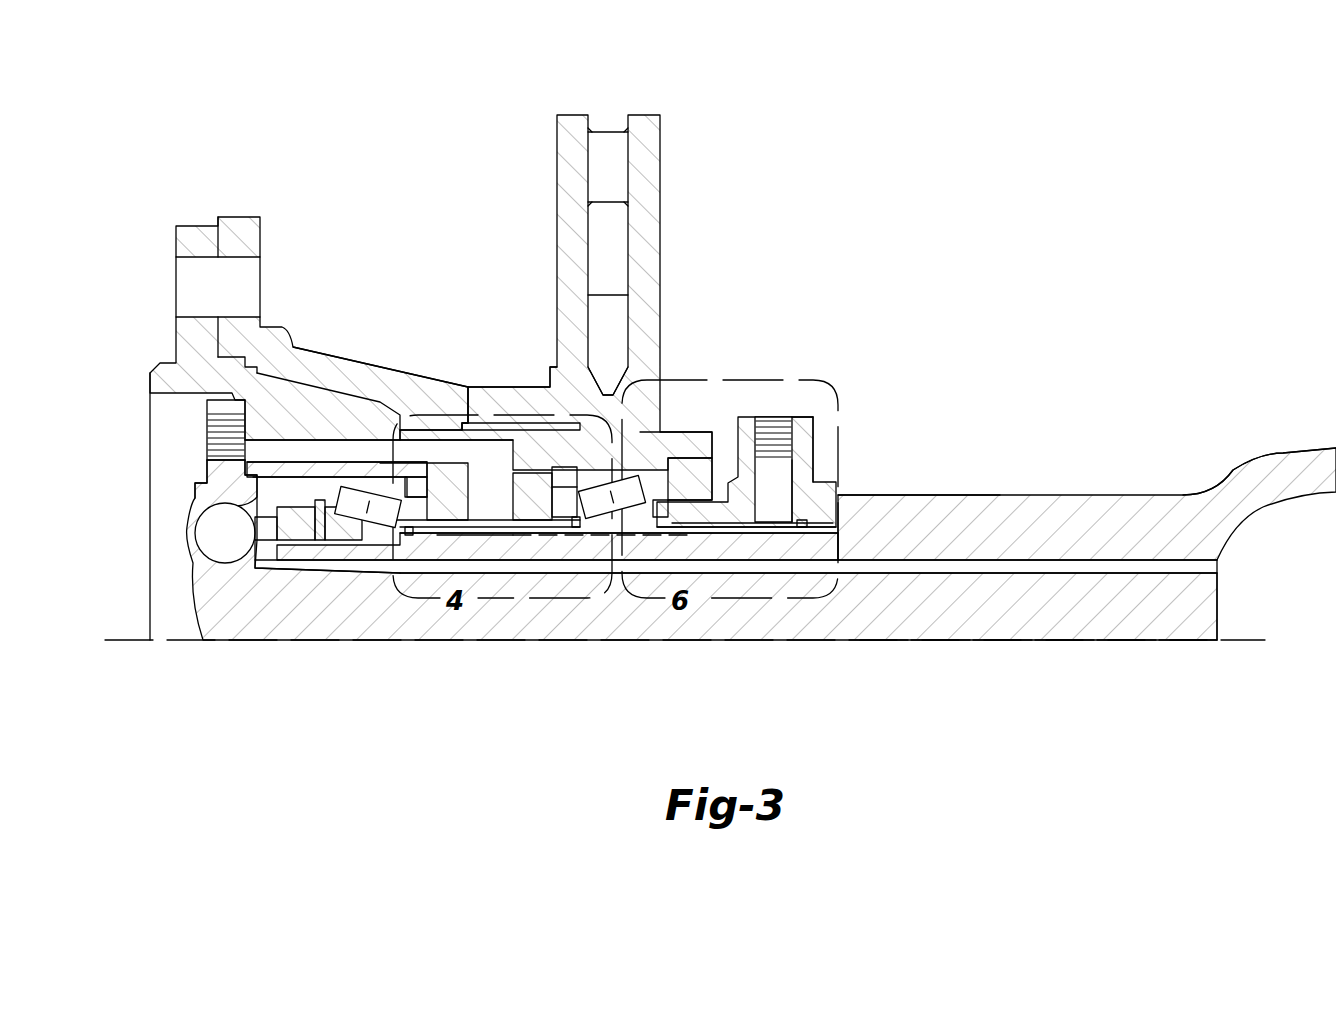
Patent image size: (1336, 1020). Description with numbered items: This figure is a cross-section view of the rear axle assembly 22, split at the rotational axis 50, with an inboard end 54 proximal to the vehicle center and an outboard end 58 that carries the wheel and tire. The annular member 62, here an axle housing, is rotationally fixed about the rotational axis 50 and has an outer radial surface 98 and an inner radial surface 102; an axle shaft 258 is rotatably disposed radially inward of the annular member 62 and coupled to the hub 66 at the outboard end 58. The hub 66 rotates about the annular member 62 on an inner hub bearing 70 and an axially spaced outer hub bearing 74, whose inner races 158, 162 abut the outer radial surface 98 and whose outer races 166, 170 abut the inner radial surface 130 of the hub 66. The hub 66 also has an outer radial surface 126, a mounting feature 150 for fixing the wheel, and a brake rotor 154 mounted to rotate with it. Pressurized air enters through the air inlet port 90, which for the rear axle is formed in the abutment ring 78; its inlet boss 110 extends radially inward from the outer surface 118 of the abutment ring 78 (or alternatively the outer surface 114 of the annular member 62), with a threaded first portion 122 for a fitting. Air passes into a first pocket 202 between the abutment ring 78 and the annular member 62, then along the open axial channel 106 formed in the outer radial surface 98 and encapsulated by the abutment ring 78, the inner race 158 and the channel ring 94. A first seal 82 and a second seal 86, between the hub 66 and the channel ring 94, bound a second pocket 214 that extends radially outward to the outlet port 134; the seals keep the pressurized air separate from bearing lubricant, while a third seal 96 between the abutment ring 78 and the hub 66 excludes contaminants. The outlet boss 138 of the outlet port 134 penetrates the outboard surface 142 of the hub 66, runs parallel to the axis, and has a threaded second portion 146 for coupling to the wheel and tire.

The rear axle assembly 22 is at (1085, 265).
The rotational axis 50 is at (1224, 642).
The inboard end 54 is at (1283, 455).
The outboard end 58 is at (150, 603).
The annular member 62 is at (1047, 510).
The hub 66 is at (150, 380).
The inner hub bearing 70 is at (640, 480).
The outer hub bearing 74 is at (335, 533).
The abutment ring 78 is at (815, 447).
The first seal 82 is at (520, 482).
The second seal 86 is at (440, 480).
The air inlet port 90 is at (777, 413).
The channel ring 94 is at (423, 533).
The third seal 96 is at (703, 460).
The outer radial surface 98 is at (475, 537).
The inner radial surface 102 is at (387, 562).
The channel 106 is at (568, 537).
The inlet boss 110 is at (793, 487).
The outer surface 114 is at (965, 495).
The outer surface 118 is at (803, 413).
The first portion 122 is at (810, 427).
The outer radial surface 126 is at (480, 432).
The inner radial surface 130 is at (252, 502).
The outlet port 134 is at (208, 440).
The outlet boss 138 is at (268, 440).
The outboard surface 142 is at (207, 483).
The second portion 146 is at (215, 425).
The mounting feature 150 is at (178, 266).
The brake rotor 154 is at (557, 150).
The inner race 158 is at (630, 523).
The inner race 162 is at (337, 557).
The outer race 166 is at (600, 393).
The outer race 170 is at (340, 482).
The first pocket 202 is at (750, 523).
The second pocket 214 is at (500, 510).
The axle shaft 258 is at (1067, 623).